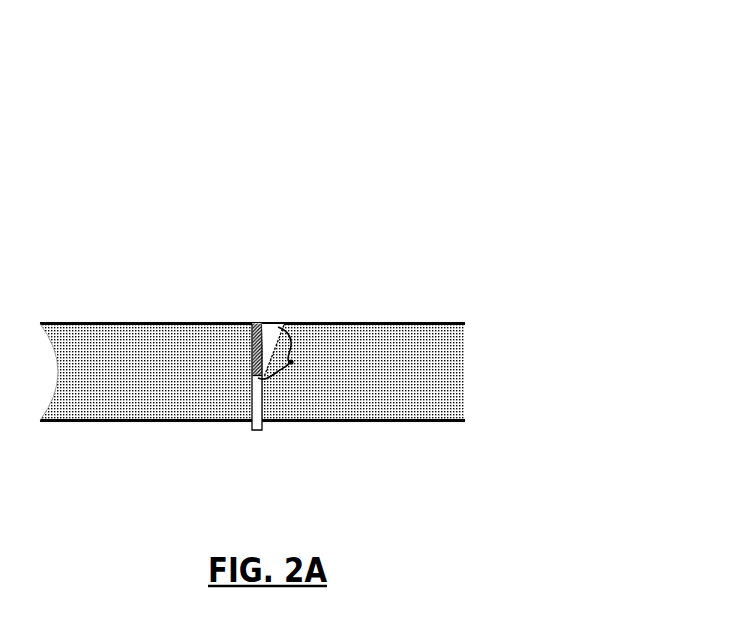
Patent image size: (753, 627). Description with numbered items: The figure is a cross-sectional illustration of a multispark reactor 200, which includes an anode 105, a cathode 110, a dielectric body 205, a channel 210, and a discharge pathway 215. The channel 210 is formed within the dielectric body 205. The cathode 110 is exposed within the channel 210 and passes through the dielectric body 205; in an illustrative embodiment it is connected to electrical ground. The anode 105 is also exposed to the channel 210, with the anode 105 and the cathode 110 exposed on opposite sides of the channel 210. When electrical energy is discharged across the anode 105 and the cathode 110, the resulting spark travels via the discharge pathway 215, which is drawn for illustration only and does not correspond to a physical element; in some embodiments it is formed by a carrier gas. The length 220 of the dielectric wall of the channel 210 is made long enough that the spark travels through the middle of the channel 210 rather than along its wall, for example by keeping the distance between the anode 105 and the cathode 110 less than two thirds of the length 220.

The multispark reactor 200 is at (195, 103).
The anode 105 is at (252, 380).
The cathode 110 is at (252, 405).
The dielectric body 205 is at (135, 384).
The channel 210 is at (243, 347).
The discharge pathway 215 is at (264, 330).
The length 220 is at (291, 362).